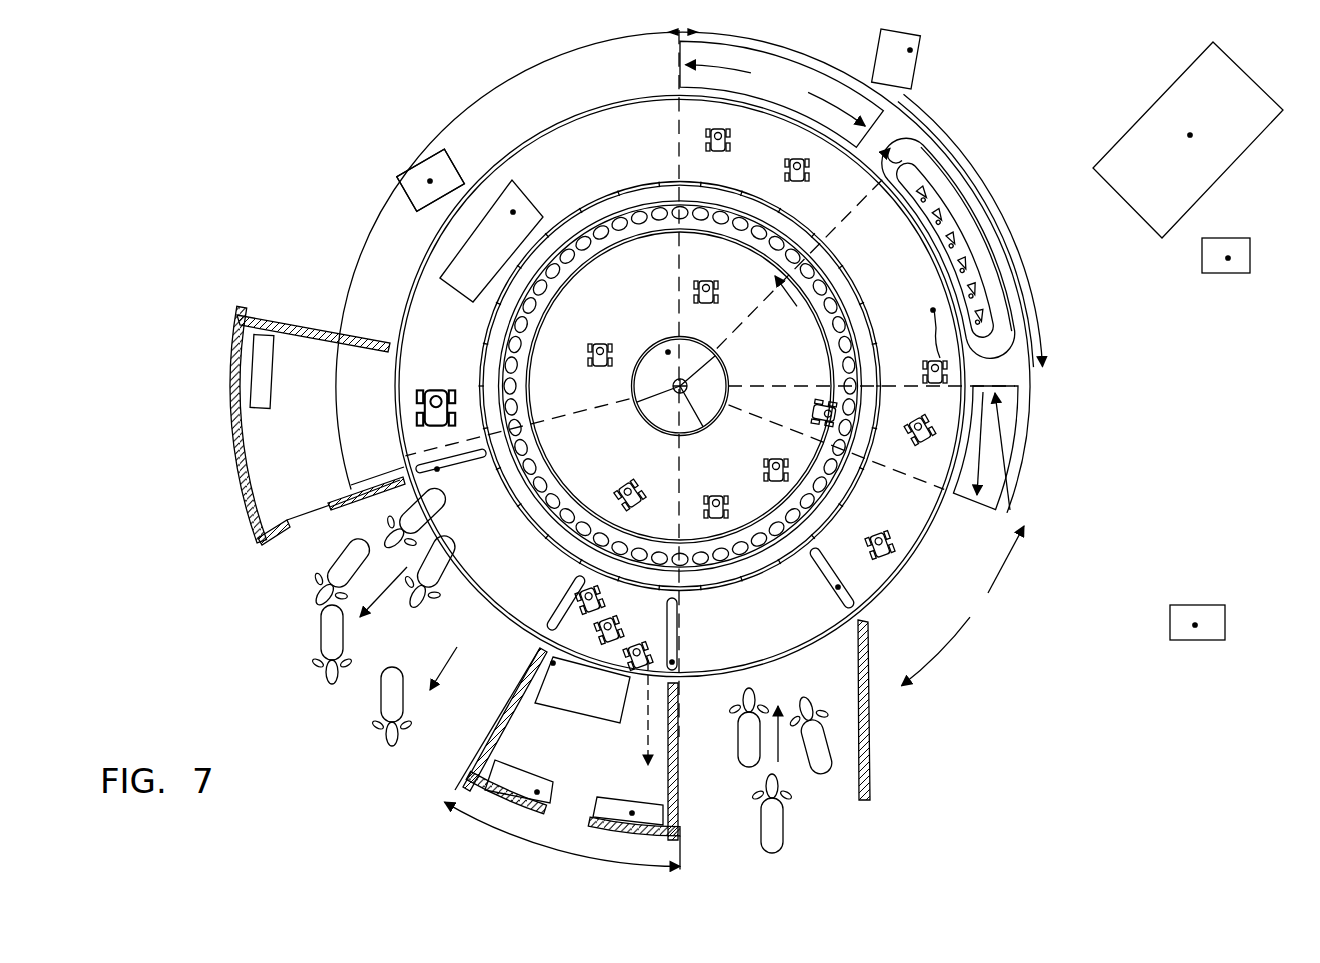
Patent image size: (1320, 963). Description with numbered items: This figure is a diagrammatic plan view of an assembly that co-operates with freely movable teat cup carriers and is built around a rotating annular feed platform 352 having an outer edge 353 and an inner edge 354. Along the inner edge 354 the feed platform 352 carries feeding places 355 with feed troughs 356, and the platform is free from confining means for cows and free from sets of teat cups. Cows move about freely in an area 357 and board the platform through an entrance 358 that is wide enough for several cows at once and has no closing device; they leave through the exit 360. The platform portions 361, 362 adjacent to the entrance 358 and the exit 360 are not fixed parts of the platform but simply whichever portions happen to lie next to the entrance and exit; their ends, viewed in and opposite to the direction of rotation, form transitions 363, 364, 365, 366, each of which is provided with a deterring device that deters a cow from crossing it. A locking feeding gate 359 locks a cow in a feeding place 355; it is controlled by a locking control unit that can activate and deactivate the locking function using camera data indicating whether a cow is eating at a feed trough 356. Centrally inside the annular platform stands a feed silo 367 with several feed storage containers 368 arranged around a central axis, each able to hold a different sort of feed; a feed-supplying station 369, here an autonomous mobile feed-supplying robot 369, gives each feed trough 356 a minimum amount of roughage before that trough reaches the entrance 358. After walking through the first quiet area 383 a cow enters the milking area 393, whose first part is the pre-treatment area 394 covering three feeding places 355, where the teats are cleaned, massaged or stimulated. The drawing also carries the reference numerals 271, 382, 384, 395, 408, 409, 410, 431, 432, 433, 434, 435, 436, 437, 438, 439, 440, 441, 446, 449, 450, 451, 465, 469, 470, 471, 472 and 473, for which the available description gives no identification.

The vehicle with antenna 271 is at (930, 364).
The annular feed platform 352 is at (680, 385).
The outer edge 353 is at (915, 547).
The inner edge 354 is at (871, 437).
The feeding places 355 is at (517, 427).
The feed troughs 356 is at (682, 383).
The area 357 is at (481, 879).
The entrance 358 is at (861, 839).
The locking feeding gate 359 is at (680, 385).
The exit 360 is at (431, 656).
The platform portion 361 is at (763, 634).
The platform portion 362 is at (526, 566).
The transition 363 is at (838, 587).
The transition 364 is at (672, 662).
The transition 365 is at (504, 632).
The transition 366 is at (400, 495).
The feed silo 367 is at (696, 386).
The feed storage containers 368 is at (668, 352).
The feed-supplying station 369 is at (762, 470).
The vehicle 382 is at (722, 520).
The first quiet area 383 is at (936, 651).
The vehicle 384 is at (866, 536).
The milking area 393 is at (948, 248).
The pre-treatment area 394 is at (986, 448).
The vehicle 395 is at (908, 428).
The outer wall 408 is at (971, 230).
The slot end 409 is at (890, 177).
The external station 410 is at (1190, 135).
The vehicle 431 is at (814, 412).
The band section 432 is at (781, 94).
The vehicles 433 is at (786, 164).
The external unit 434 is at (1228, 258).
The station box 435 is at (910, 50).
The outer wall segment 436 is at (395, 182).
The vehicle 437 is at (736, 250).
The vehicle 438 is at (598, 353).
The station box 439 is at (513, 212).
The station box interior 440 is at (430, 181).
The vehicle 441 is at (450, 406).
The wedge compartment 446 is at (248, 424).
The box 449 is at (262, 375).
The compartment span 450 is at (563, 835).
The vehicles 451 is at (612, 620).
The compartment area 465 is at (621, 763).
The box 469 is at (553, 663).
The wall 470 is at (690, 800).
The box 471 is at (640, 775).
The box 472 is at (537, 792).
The vehicle 473 is at (618, 493).